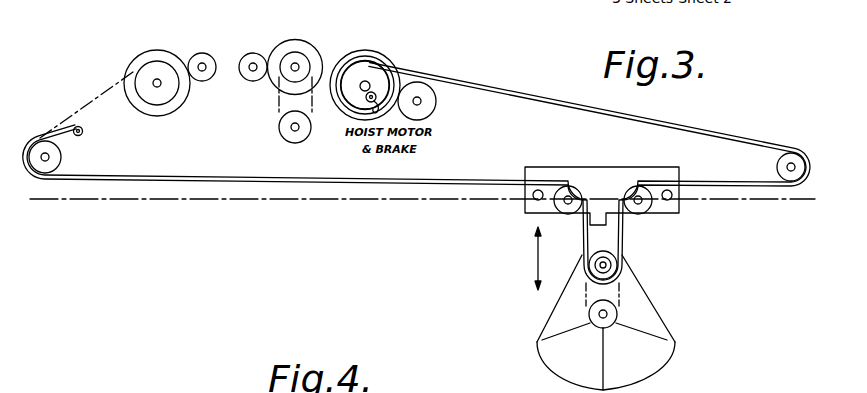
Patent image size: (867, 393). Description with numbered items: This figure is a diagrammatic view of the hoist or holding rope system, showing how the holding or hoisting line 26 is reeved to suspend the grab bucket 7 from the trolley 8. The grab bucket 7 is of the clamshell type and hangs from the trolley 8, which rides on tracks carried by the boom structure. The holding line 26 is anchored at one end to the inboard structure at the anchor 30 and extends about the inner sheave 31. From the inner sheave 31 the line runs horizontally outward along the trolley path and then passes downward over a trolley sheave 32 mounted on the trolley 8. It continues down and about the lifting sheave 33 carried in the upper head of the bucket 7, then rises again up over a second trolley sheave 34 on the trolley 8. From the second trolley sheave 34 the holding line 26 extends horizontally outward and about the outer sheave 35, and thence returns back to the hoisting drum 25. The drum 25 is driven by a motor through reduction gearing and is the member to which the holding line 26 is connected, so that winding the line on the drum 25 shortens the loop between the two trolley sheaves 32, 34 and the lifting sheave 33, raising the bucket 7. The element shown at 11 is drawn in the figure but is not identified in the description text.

The grab bucket 7 is at (655, 328).
The trolley 8 is at (608, 172).
The hoist drum 11 is at (388, 48).
The drum 25 is at (363, 70).
The holding line 26 is at (195, 177).
The anchor 30 is at (83, 131).
The inner sheave 31 is at (52, 157).
The trolley sheave 32 is at (560, 208).
The lifting sheave 33 is at (611, 268).
The second trolley sheave 34 is at (643, 212).
The outer sheave 35 is at (781, 166).